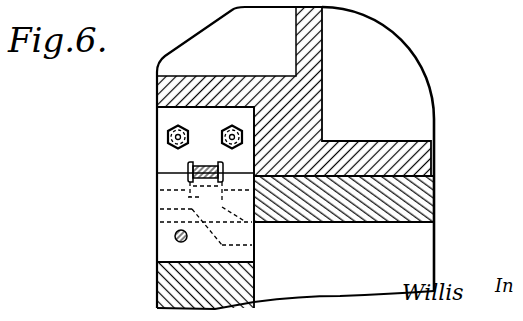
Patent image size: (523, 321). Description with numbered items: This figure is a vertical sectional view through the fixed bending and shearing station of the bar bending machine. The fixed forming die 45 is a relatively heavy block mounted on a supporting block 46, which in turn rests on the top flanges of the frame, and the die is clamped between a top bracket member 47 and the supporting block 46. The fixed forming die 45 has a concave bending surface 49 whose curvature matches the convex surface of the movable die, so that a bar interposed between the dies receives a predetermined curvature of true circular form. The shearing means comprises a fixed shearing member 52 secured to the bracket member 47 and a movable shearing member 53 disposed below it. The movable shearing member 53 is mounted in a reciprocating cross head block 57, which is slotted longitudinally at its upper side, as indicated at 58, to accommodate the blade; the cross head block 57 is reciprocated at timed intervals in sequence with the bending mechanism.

The fixed forming die 45 is at (434, 208).
The supporting block 46 is at (432, 246).
The top bracket member 47 is at (392, 40).
The concave bending surface 49 is at (255, 231).
The fixed shearing member 52 is at (169, 150).
The movable shearing member 53 is at (170, 201).
The cross head block 57 is at (168, 277).
The slot 58 is at (168, 245).